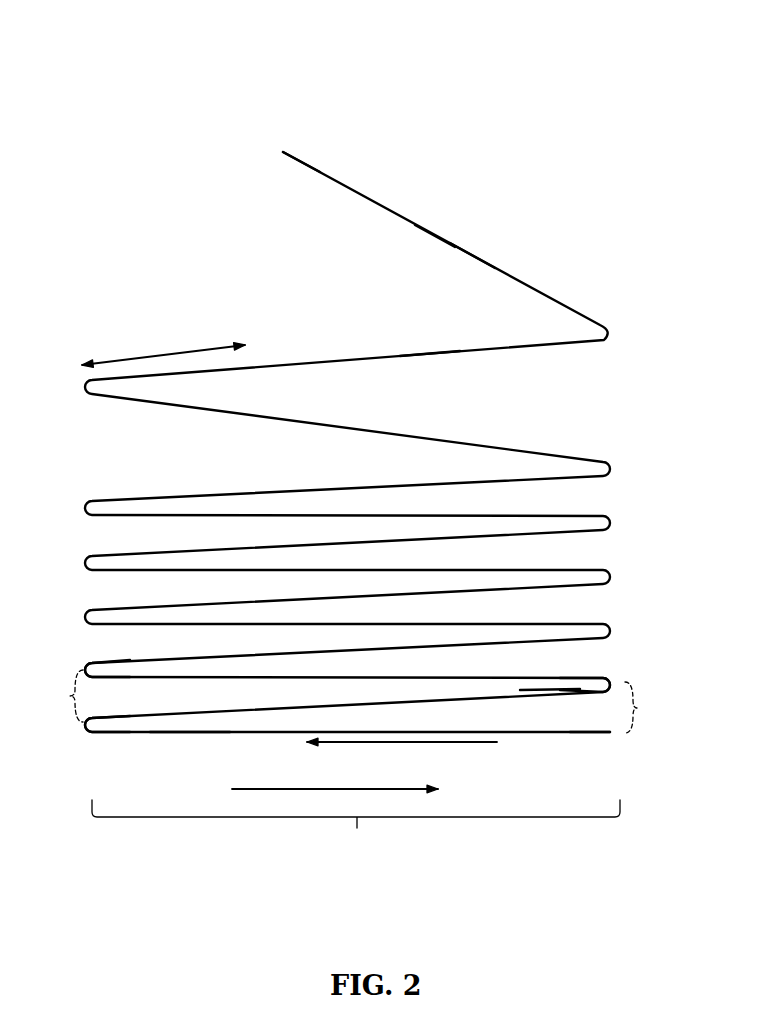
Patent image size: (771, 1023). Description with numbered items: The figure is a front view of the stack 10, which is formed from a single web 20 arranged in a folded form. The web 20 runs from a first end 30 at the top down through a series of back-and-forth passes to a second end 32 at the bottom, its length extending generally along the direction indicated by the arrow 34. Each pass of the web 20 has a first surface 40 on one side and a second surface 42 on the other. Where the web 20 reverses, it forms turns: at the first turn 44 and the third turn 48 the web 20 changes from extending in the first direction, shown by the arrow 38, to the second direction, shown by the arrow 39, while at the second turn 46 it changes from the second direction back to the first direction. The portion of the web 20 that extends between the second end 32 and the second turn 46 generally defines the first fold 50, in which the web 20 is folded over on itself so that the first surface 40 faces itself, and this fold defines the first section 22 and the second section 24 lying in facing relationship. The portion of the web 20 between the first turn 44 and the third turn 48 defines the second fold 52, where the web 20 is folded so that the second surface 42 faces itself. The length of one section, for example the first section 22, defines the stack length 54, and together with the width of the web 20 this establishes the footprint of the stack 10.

The stack 10 is at (352, 445).
The web 20 is at (348, 190).
The first section 22 is at (188, 733).
The second section 24 is at (550, 692).
The first end 30 is at (283, 152).
The second end 32 is at (610, 732).
The arrow 34 is at (163, 350).
The arrow 38 is at (402, 750).
The arrow 39 is at (335, 798).
The first surface 40 is at (473, 247).
The second surface 42 is at (424, 349).
The first turn 44 is at (83, 723).
The second turn 46 is at (609, 686).
The third turn 48 is at (87, 665).
The first fold 50 is at (651, 707).
The second fold 52 is at (58, 696).
The stack length 54 is at (356, 840).